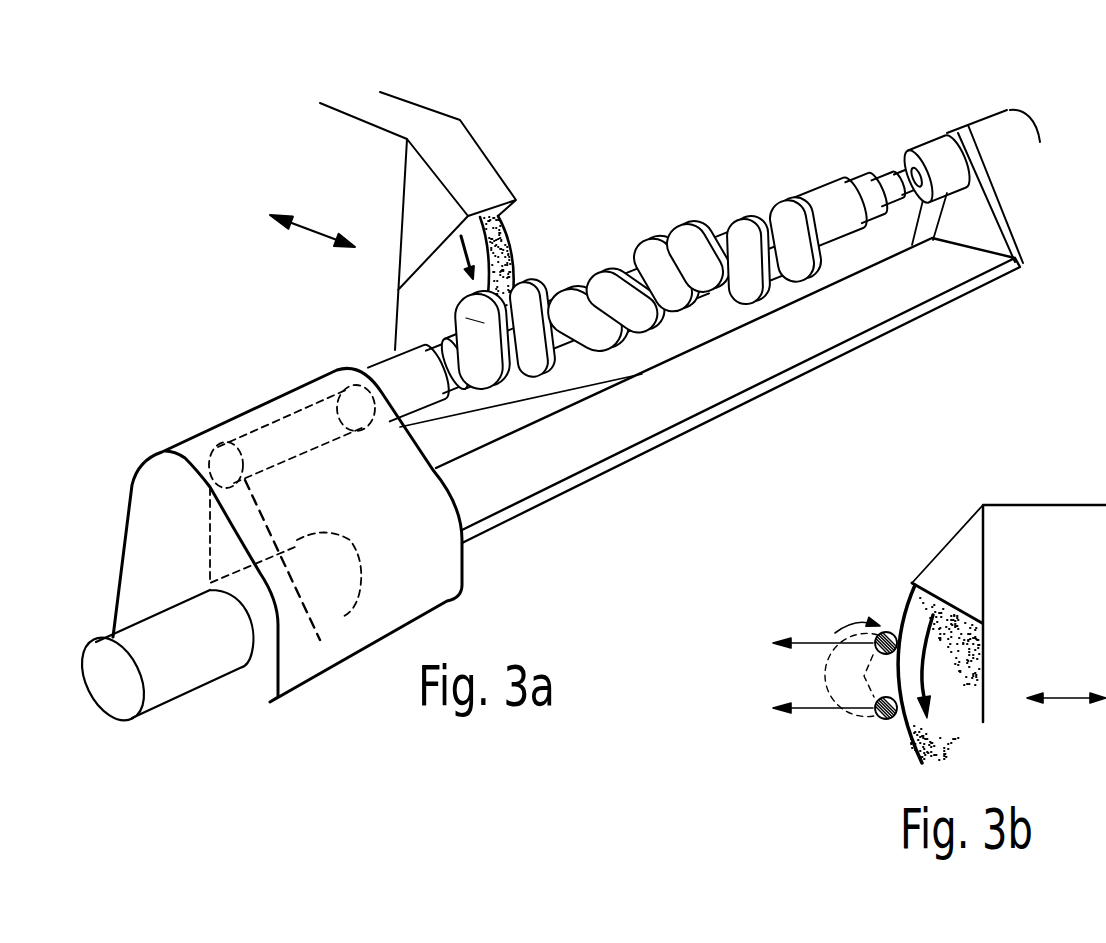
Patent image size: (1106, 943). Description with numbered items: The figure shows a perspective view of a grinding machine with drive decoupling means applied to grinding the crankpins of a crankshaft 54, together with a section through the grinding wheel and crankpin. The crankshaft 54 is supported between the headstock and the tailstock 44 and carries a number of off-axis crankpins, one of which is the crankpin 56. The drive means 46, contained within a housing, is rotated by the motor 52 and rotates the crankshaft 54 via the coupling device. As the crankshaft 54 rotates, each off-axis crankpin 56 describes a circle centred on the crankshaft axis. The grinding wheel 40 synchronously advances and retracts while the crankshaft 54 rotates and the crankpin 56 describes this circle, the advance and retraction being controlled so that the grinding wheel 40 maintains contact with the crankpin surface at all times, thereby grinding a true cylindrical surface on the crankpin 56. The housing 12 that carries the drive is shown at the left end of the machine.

In FIG. 3A, the grinding head housing 12 is at (287, 496).
In FIG. 3A, the grinding wheel 40 is at (515, 248).
In FIG. 3B, the grinding wheel 40 is at (950, 720).
In FIG. 3A, the tailstock 44 is at (933, 140).
In FIG. 3A, the drive means 46 is at (280, 414).
In FIG. 3A, the motor 52 is at (126, 698).
In FIG. 3A, the crankshaft 54 is at (671, 325).
In FIG. 3A, the crankpin 56 is at (512, 318).
In FIG. 3B, the crankpin 56 is at (875, 720).